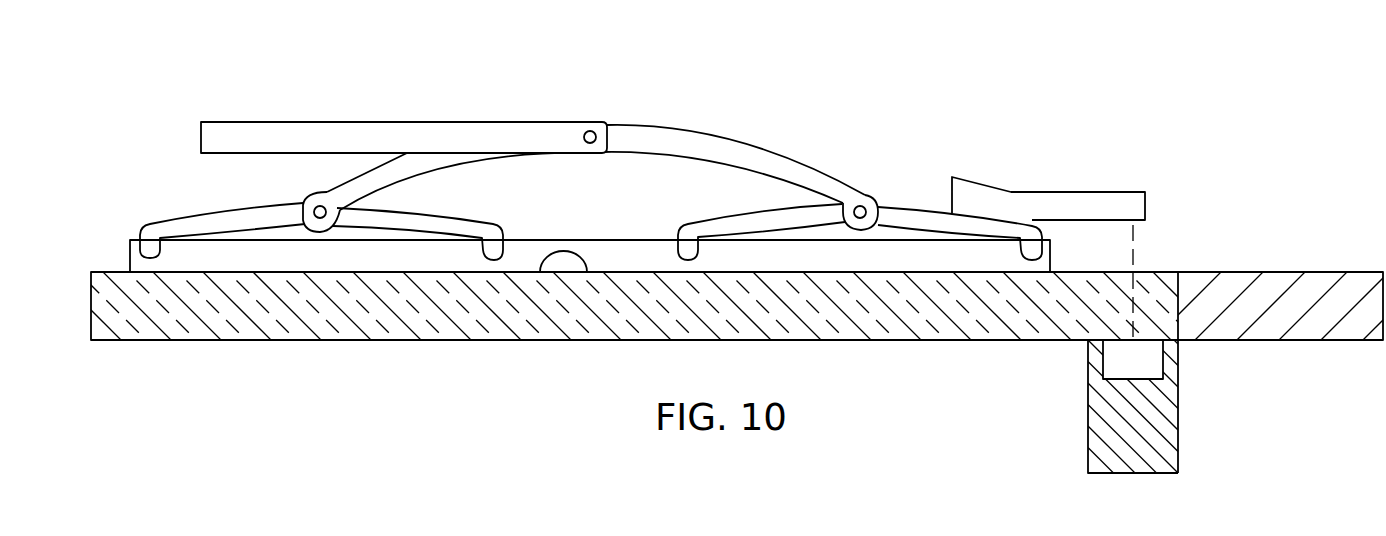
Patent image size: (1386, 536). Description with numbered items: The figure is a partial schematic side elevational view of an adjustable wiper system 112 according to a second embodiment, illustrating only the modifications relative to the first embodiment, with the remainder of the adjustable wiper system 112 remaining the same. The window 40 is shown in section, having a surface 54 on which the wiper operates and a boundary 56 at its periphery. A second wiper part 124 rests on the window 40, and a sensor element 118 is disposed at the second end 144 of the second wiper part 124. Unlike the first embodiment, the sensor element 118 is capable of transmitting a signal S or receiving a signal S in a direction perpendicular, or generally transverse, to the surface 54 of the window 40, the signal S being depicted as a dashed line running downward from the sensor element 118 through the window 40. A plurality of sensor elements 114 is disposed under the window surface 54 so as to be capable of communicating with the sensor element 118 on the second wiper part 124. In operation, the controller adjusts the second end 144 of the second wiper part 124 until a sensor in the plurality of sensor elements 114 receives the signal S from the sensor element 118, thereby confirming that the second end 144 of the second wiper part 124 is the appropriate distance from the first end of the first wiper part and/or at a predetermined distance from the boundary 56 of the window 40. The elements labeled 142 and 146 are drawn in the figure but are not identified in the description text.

The window 40 is at (952, 342).
The surface of the window 54 is at (540, 272).
The boundary of the window 56 is at (1302, 341).
The adjustable wiper system 112 is at (601, 170).
The plurality of sensor elements 114 is at (1128, 359).
The sensor element 118 is at (1058, 192).
The second wiper part 124 is at (625, 239).
The left hook end 142 is at (130, 252).
The second end of the second wiper part 144 is at (1048, 257).
The bar 146 is at (282, 121).
The signal S is at (1134, 253).